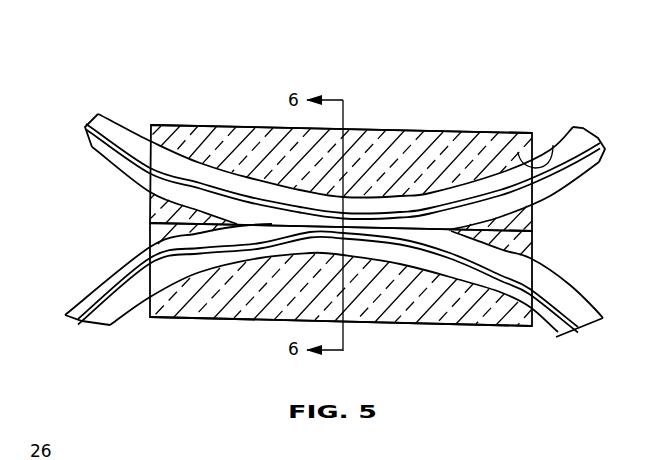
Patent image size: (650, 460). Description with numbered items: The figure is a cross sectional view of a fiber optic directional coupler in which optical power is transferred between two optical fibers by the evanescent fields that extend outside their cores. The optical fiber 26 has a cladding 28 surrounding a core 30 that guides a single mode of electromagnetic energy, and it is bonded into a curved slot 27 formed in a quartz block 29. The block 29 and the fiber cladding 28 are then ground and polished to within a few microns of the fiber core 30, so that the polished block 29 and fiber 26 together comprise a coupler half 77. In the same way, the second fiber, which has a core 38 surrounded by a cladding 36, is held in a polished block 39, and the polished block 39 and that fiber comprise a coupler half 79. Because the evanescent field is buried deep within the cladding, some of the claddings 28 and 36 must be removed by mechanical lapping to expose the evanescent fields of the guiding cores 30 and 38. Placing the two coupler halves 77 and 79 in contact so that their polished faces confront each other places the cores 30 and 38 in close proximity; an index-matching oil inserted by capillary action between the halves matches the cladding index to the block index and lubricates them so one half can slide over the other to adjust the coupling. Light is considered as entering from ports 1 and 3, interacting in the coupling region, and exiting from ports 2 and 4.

The port 1 is at (66, 77).
The port 2 is at (582, 97).
The port 3 is at (70, 358).
The port 4 is at (567, 363).
The optical fiber 26 is at (323, 122).
The curved slot 27 is at (553, 145).
The cladding 28 is at (92, 143).
The quartz block 29 is at (420, 132).
The core 30 is at (128, 138).
The cladding 36 is at (329, 308).
The core 38 is at (574, 288).
The polished block 39 is at (444, 330).
The coupler half 77 is at (385, 102).
The coupler half 79 is at (502, 402).